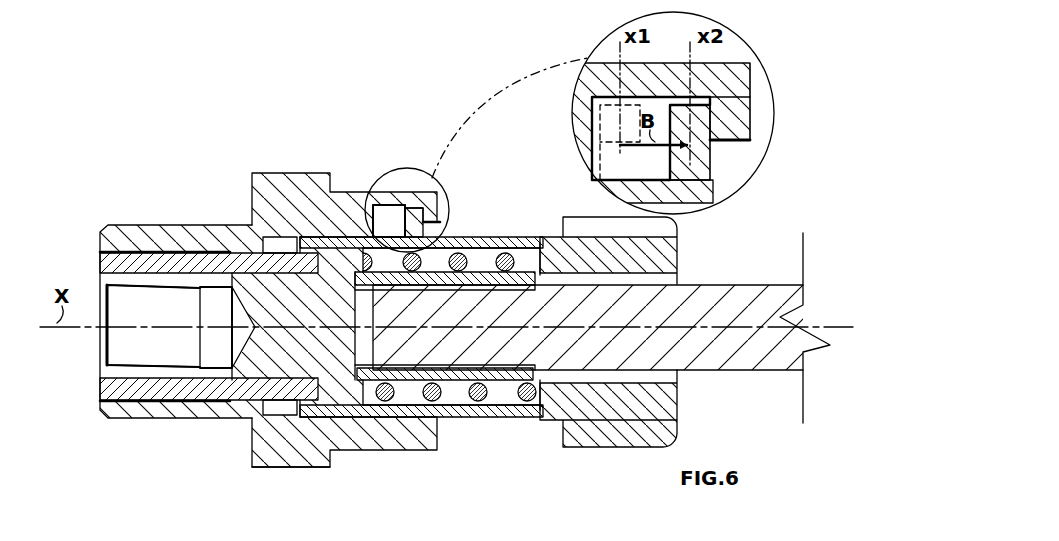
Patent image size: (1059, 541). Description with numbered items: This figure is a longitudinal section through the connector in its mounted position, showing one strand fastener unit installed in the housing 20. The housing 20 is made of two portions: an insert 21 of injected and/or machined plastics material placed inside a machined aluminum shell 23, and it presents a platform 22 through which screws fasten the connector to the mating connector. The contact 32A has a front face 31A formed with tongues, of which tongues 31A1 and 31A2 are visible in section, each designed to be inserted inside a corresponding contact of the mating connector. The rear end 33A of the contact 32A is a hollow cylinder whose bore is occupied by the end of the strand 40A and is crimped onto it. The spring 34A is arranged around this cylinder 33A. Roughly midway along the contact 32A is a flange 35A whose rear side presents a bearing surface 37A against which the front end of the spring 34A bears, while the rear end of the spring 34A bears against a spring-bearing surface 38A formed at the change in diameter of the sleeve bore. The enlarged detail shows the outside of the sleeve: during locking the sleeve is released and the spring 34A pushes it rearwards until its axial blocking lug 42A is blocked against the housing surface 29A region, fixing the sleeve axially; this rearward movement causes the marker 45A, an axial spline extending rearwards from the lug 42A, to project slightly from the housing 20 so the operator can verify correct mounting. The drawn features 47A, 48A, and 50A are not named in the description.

The housing 20 is at (168, 160).
The insert 21 is at (104, 263).
The platform 22 is at (283, 452).
The aluminum shell 23 is at (128, 240).
The surface of the housing 29A is at (598, 106).
The front face of the contact 31A is at (95, 350).
The tongue 31A1 is at (155, 302).
The tongue 31A2 is at (155, 340).
The contact 32A is at (280, 292).
The rear end of the contact 33A is at (463, 277).
The spring 34A is at (478, 403).
The flange 35A is at (327, 270).
The bearing surface 37A is at (377, 388).
The spring-bearing surface 38A is at (532, 260).
The strand 40A is at (771, 283).
The axial blocking lug 42A is at (707, 100).
The marker 45A is at (737, 132).
The stop block 47A is at (705, 133).
The face 48A is at (727, 128).
The edge 50A is at (727, 143).